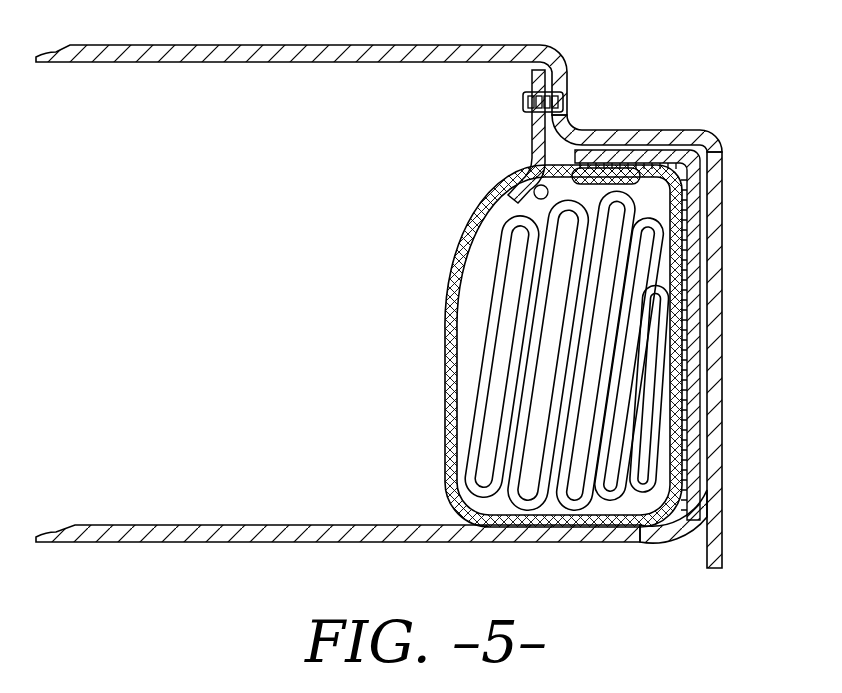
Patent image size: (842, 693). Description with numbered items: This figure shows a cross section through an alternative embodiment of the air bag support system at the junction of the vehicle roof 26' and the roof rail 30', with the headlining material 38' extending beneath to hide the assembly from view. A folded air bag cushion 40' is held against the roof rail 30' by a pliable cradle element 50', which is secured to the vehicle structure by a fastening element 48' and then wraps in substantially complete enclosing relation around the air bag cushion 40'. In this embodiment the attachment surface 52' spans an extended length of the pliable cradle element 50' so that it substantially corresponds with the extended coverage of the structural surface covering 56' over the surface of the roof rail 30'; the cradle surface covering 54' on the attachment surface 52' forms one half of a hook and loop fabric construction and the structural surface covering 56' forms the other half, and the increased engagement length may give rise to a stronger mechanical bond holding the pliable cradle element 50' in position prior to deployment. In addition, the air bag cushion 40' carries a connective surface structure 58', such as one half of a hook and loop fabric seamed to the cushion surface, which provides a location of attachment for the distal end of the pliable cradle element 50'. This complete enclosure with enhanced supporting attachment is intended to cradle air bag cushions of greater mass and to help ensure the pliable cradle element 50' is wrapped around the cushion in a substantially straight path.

The roof 26' is at (301, 80).
The roof rail 30' is at (742, 360).
The headlining material 38' is at (338, 514).
The air bag cushion 40' is at (526, 351).
The fastening element 48' is at (507, 102).
The pliable cradle element 50' is at (543, 346).
The attachment surface 52' is at (713, 522).
The cradle surface covering 54' is at (636, 301).
The structural surface covering 56' is at (662, 127).
The connective surface structure 58' is at (497, 136).